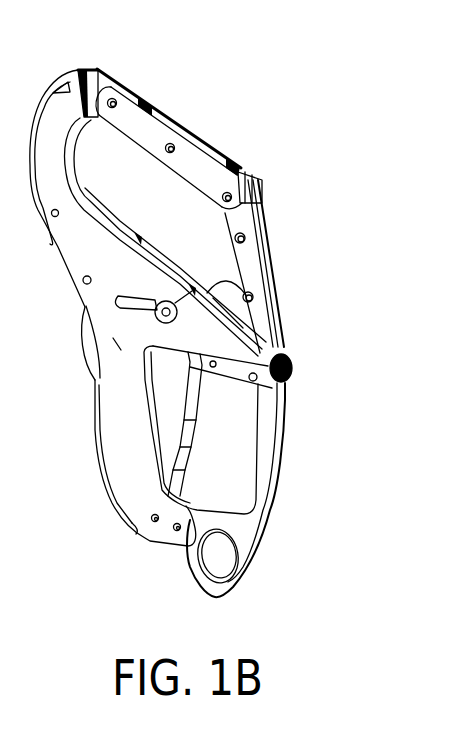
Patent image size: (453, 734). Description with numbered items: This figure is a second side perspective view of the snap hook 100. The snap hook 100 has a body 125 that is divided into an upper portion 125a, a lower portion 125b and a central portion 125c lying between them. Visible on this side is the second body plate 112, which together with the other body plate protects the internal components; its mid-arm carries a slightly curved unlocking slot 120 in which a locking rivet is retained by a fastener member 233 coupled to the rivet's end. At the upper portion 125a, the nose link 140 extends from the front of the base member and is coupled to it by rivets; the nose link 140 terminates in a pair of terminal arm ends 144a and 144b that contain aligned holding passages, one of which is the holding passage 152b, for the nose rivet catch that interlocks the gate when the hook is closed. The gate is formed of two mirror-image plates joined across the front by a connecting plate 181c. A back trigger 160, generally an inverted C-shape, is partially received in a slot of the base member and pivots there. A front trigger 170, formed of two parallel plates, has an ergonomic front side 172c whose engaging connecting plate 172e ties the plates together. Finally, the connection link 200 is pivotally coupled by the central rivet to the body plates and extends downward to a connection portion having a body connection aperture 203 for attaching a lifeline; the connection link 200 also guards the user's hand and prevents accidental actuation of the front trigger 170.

The snap hook 100 is at (266, 88).
The second body plate 112 is at (113, 450).
The unlocking slot 120 is at (141, 242).
The body 125 is at (63, 243).
The upper portion 125a is at (90, 68).
The lower portion 125b is at (147, 543).
The central portion 125c is at (120, 343).
The nose link 140 is at (163, 123).
The terminal arm end 144a is at (252, 182).
The terminal arm end 144b is at (262, 197).
The holding passage 152b is at (245, 216).
The back trigger 160 is at (85, 333).
The front trigger 170 is at (163, 440).
The front side 172c is at (190, 458).
The engaging connecting plate 172e is at (193, 399).
The connecting plate 181c is at (280, 318).
The connection link 200 is at (260, 485).
The body connection aperture 203 is at (220, 566).
The fastener member 233 is at (196, 285).